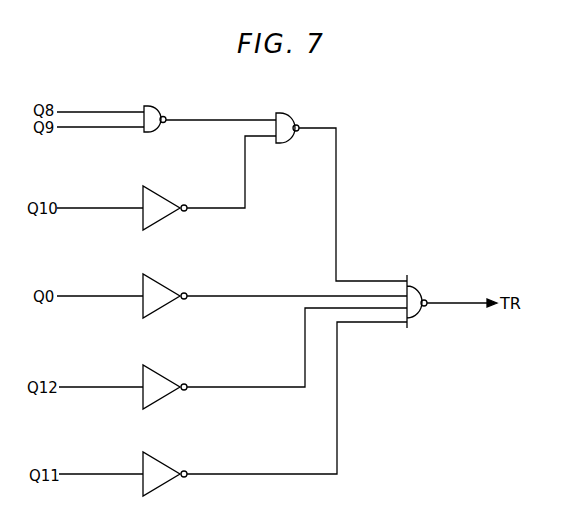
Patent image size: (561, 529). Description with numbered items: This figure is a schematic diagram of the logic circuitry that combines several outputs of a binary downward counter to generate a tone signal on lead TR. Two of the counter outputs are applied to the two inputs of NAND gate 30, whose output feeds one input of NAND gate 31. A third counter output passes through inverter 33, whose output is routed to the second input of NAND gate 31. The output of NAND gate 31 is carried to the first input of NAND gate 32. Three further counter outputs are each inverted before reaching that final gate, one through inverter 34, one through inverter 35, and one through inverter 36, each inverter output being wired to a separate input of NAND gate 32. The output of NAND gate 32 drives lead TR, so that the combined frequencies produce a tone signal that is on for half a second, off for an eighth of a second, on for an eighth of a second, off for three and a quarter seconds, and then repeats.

The NAND gate 30 is at (153, 106).
The NAND gate 31 is at (283, 113).
The NAND gate 32 is at (413, 286).
The inverter 33 is at (157, 194).
The inverter 34 is at (159, 284).
The inverter 35 is at (161, 376).
The inverter 36 is at (163, 464).